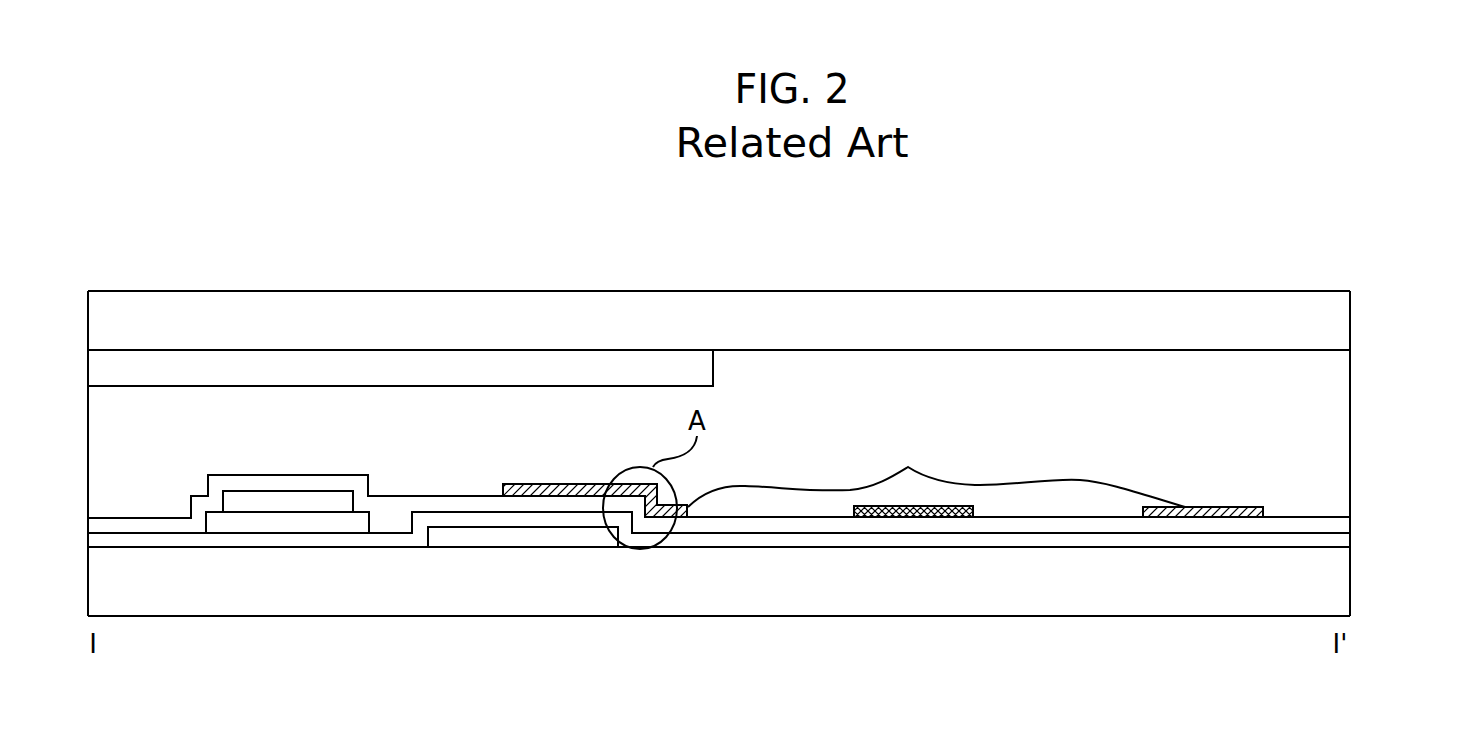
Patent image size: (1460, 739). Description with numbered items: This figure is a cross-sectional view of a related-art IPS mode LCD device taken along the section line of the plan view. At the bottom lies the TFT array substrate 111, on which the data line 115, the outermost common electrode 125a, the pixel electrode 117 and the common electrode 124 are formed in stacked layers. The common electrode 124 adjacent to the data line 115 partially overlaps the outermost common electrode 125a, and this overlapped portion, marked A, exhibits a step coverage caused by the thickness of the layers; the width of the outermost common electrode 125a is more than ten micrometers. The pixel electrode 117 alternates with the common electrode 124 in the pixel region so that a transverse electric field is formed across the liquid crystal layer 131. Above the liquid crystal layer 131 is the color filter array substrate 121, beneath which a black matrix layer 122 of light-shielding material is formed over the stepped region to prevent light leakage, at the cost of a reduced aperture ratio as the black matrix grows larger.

The TFT array substrate 111 is at (1340, 578).
The data line 115 is at (287, 502).
The pixel electrode 117 is at (910, 513).
The color filter array substrate 121 is at (1340, 318).
The black matrix layer 122 is at (443, 367).
The common electrode 124 is at (908, 467).
The outermost common electrode 125a is at (517, 538).
The liquid crystal layer 131 is at (1340, 428).